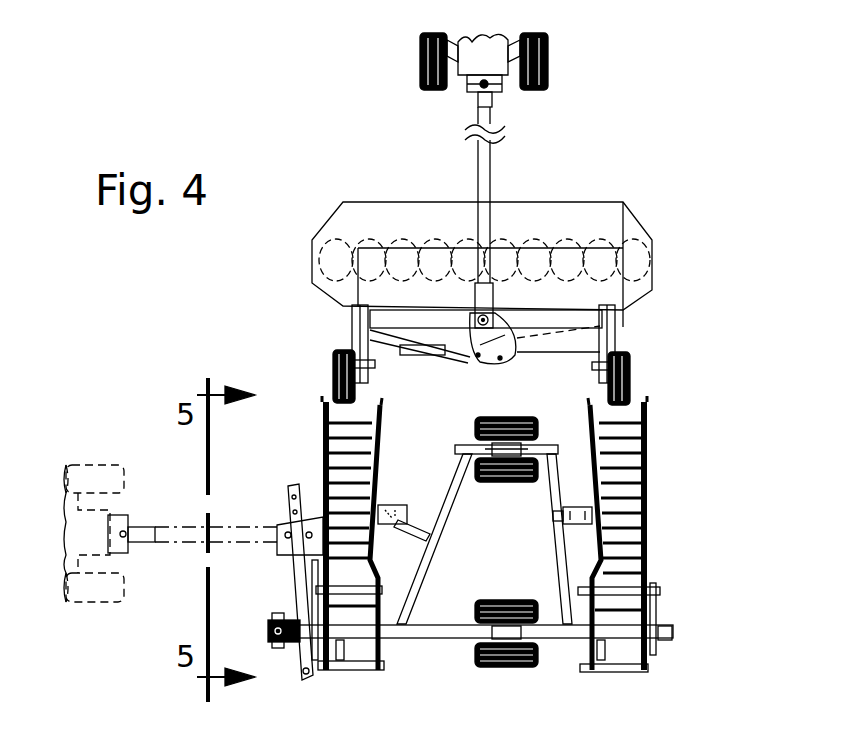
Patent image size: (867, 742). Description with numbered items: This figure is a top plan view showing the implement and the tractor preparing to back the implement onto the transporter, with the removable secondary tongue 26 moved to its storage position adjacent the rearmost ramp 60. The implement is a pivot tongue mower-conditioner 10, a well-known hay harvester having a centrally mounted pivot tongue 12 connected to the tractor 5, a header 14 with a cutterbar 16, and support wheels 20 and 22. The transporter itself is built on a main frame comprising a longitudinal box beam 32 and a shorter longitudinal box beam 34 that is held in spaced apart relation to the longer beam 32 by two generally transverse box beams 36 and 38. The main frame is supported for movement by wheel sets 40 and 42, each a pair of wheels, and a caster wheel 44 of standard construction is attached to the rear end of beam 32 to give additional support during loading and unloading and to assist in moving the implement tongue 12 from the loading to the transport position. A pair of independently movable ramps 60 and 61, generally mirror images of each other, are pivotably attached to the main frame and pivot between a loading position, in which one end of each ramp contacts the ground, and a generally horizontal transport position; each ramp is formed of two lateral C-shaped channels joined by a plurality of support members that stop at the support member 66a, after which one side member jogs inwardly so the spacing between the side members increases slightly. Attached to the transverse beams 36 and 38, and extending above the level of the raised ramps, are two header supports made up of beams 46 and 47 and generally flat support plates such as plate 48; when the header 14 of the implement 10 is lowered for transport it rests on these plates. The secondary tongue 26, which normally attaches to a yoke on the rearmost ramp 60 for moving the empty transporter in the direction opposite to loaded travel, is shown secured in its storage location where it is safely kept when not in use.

The tractor 5 is at (480, 52).
The pivot tongue mower-conditioner 10 is at (688, 253).
The pivot tongue 12 is at (484, 185).
The header 14 is at (373, 220).
The cutterbar 16 is at (330, 240).
The support wheel 20 is at (338, 358).
The support wheel 22 is at (632, 362).
The secondary tongue 26 is at (303, 572).
The longitudinal box beam 32 is at (430, 630).
The shorter longitudinal box beam 34 is at (462, 447).
The transverse box beam 36 is at (447, 507).
The transverse box beam 38 is at (559, 554).
The wheel set 40 is at (518, 418).
The wheel set 42 is at (510, 660).
The caster wheel 44 is at (296, 648).
The beam 46 is at (416, 519).
The beam 47 is at (558, 515).
The support plate 48 is at (386, 505).
The ramp 60 is at (305, 449).
The ramp 61 is at (672, 466).
The support member 66a is at (620, 565).